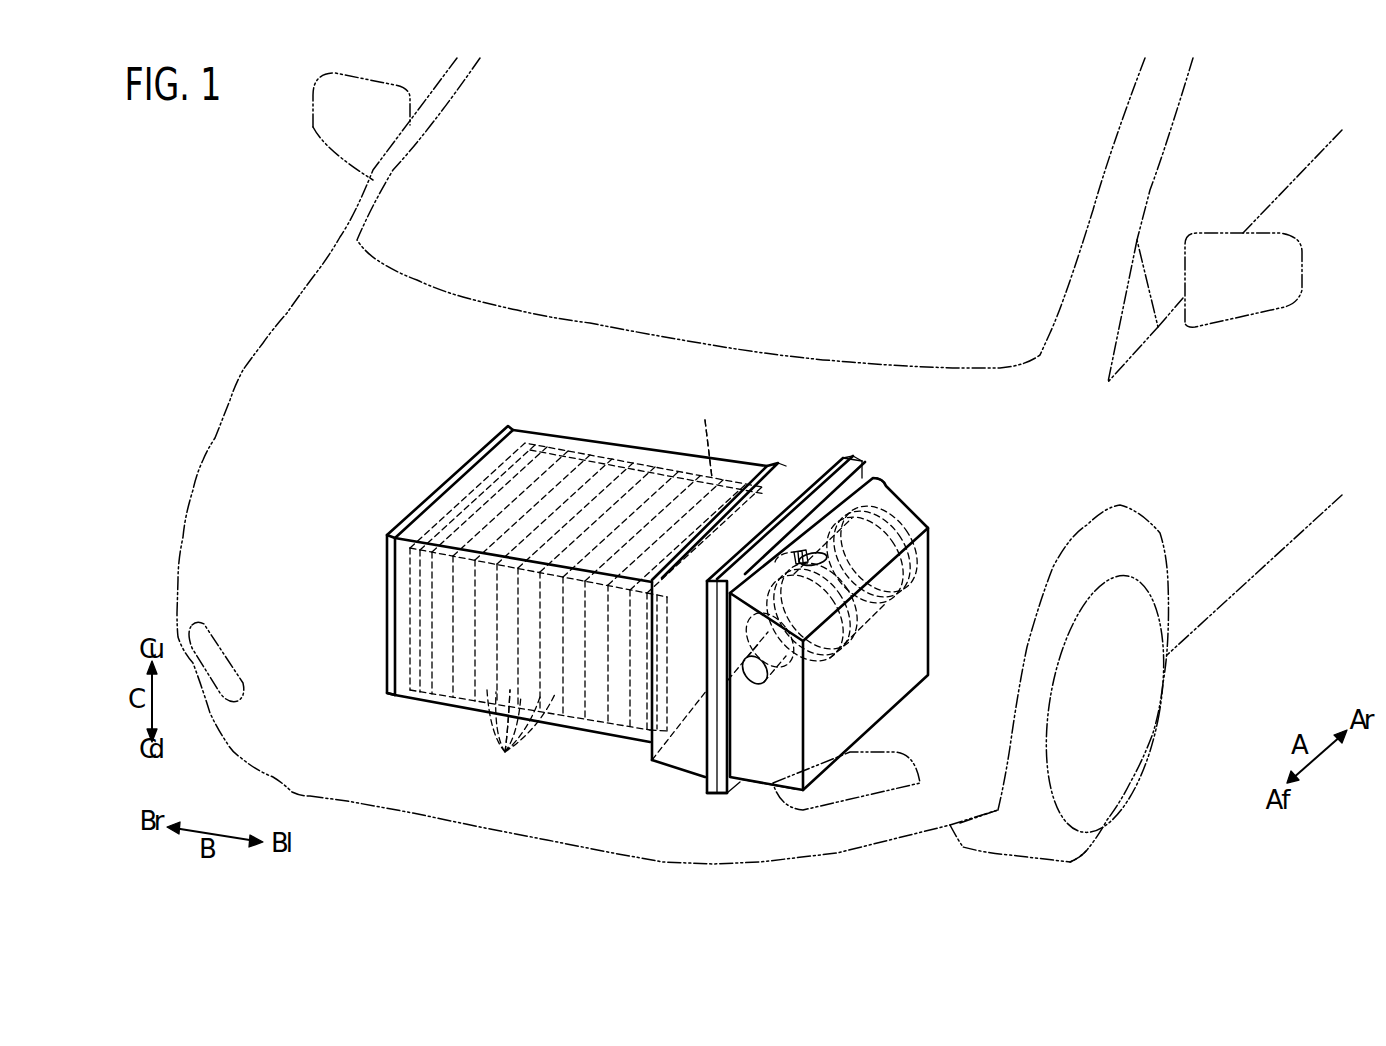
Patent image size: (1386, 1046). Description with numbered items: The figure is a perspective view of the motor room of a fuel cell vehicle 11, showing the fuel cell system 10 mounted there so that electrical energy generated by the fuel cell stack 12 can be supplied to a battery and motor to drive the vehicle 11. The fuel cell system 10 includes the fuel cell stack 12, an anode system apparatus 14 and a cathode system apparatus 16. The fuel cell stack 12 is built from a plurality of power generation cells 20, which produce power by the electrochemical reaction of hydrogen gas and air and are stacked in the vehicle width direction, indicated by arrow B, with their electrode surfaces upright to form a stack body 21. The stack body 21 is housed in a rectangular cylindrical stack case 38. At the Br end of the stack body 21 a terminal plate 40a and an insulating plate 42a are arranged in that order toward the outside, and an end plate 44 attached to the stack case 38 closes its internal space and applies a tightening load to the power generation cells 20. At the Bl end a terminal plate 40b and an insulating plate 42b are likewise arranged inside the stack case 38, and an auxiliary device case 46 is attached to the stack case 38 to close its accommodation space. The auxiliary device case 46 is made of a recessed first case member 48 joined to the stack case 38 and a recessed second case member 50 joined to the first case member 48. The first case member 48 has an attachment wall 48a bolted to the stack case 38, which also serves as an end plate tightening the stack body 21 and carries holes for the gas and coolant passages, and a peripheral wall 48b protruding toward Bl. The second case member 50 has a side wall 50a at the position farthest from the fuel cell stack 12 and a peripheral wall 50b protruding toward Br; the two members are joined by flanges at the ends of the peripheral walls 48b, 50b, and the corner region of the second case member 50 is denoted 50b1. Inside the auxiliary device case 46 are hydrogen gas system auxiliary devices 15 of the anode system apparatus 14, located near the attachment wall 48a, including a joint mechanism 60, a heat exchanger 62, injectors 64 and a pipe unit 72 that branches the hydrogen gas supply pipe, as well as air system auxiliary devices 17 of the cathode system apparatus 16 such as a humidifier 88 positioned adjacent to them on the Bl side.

The fuel cell system 10 is at (428, 430).
The fuel cell vehicle 11 is at (292, 280).
The fuel cell stack 12 is at (392, 586).
The anode system apparatus 14 is at (887, 486).
The hydrogen gas system auxiliary devices 15 is at (887, 486).
The cathode system apparatus 16 is at (897, 727).
The air system auxiliary devices 17 is at (829, 674).
The power generation cell 20 is at (521, 736).
The stack body 21 is at (540, 697).
The stack case 38 is at (555, 432).
The terminal plate 40a is at (423, 692).
The terminal plate 40b is at (612, 713).
The insulating plate 42a is at (403, 690).
The insulating plate 42b is at (650, 748).
The end plate 44 is at (410, 512).
The auxiliary device case 46 is at (885, 408).
The first case member 48 is at (764, 619).
The attachment wall 48a is at (783, 493).
The peripheral wall 48b is at (692, 757).
The second case member 50 is at (862, 623).
The side wall 50a is at (912, 657).
The peripheral wall 50b is at (757, 770).
The corner of box portion 50b1 is at (912, 512).
The joint mechanism 60 is at (824, 562).
The heat exchanger 62 is at (693, 434).
The injector 64 is at (718, 657).
The pipe unit 72 is at (712, 470).
The humidifier 88 is at (875, 600).